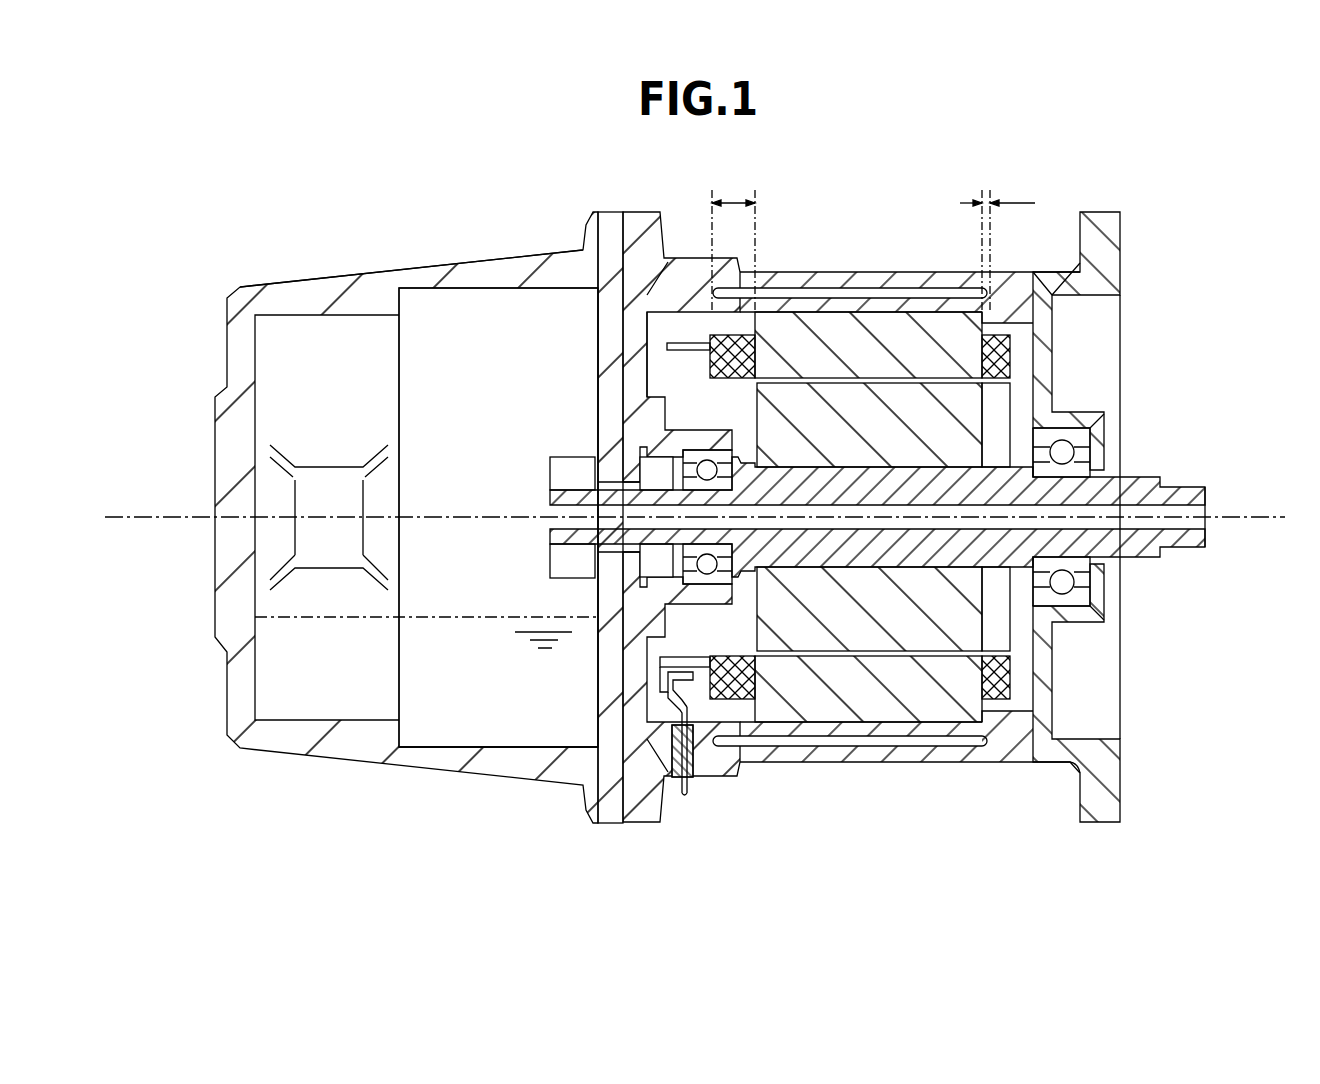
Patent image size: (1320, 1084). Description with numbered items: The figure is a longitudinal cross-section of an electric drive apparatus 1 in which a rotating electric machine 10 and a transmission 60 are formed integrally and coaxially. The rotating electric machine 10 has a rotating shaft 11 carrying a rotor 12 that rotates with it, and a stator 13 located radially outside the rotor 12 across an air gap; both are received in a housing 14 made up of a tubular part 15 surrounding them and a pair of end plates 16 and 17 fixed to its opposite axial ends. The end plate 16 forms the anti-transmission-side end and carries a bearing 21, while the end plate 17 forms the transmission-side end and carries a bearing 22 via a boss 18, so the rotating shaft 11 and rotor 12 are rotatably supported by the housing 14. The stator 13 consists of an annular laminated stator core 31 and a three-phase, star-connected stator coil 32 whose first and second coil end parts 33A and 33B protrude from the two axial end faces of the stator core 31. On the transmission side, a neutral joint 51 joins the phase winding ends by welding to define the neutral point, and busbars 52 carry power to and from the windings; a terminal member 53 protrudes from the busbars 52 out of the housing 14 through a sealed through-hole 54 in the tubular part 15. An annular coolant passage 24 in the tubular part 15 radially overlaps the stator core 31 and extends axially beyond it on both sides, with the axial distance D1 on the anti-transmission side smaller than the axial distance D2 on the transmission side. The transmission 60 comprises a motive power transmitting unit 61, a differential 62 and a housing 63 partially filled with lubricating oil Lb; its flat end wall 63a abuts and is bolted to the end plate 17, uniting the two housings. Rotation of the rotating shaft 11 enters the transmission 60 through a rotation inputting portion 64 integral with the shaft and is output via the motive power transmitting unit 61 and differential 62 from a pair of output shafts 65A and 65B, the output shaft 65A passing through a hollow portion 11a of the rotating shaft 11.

The electric drive apparatus 1 is at (886, 512).
The rotating electric machine 10 is at (896, 481).
The rotating shaft 11 is at (888, 538).
The hollow portion 11a is at (1170, 527).
The rotor 12 is at (868, 630).
The stator 13 is at (872, 591).
The housing 14 is at (935, 272).
The tubular part 15 is at (770, 270).
The end plate 16 is at (1120, 227).
The end plate 17 is at (640, 211).
The boss 18 is at (647, 377).
The bearing 21 is at (1067, 427).
The bearing 22 is at (722, 450).
The coolant passage 24 is at (880, 298).
The stator core 31 is at (828, 712).
The stator coil 32 is at (760, 747).
The first coil end part 33A is at (1010, 703).
The second coil end part 33B is at (697, 730).
The neutral joint 51 is at (688, 343).
The busbars 52 is at (660, 677).
The terminal member 53 is at (690, 795).
The through-hole 54 is at (681, 770).
The transmission 60 is at (406, 506).
The motive power transmitting unit 61 is at (430, 287).
The differential 62 is at (275, 310).
The housing 63 is at (488, 272).
The end wall 63a is at (600, 717).
The rotation inputting portion 64 is at (563, 457).
The output shaft 65A is at (1240, 507).
The output shaft 65B is at (177, 517).
The lubricating oil Lb is at (435, 730).
The axial distance D1 is at (998, 244).
The axial distance D2 is at (733, 244).